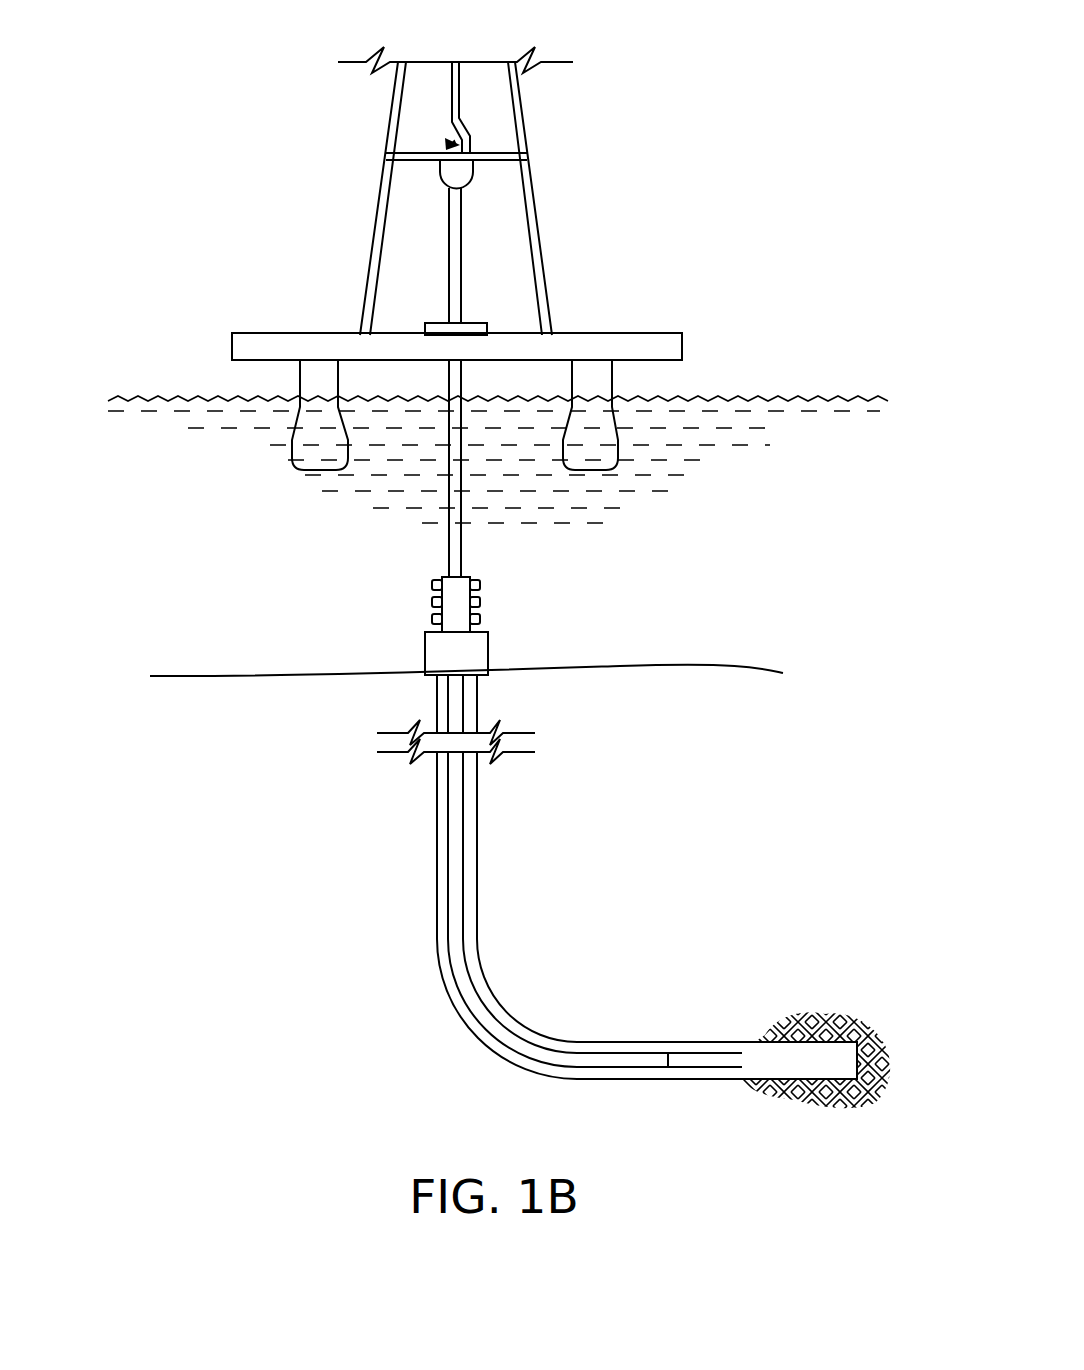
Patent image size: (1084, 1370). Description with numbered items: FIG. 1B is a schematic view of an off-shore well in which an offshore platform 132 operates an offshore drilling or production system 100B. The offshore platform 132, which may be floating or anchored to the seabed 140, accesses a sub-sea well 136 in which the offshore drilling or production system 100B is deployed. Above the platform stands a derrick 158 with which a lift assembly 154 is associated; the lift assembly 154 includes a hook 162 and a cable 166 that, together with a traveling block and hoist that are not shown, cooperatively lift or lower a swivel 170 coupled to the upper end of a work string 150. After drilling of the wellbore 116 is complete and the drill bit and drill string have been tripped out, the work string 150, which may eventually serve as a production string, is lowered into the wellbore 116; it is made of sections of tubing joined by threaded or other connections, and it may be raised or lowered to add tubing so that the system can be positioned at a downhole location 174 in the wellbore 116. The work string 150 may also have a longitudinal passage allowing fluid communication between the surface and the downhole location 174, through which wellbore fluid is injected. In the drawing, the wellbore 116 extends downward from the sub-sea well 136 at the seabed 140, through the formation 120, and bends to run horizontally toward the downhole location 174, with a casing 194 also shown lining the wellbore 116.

The offshore drilling or production system 100B is at (770, 96).
The lift assembly 154 is at (438, 68).
The derrick 158 is at (537, 228).
The cable 166 is at (452, 112).
The hook 162 is at (466, 138).
The swivel 170 is at (445, 189).
The offshore platform 132 is at (647, 333).
The work string 150 is at (449, 370).
The sub-sea well 136 is at (514, 620).
The seabed 140 is at (625, 666).
The wellbore 116 is at (471, 858).
The casing 194 is at (437, 860).
The subterranean formation 120 is at (780, 955).
The downhole location 174 is at (823, 1035).